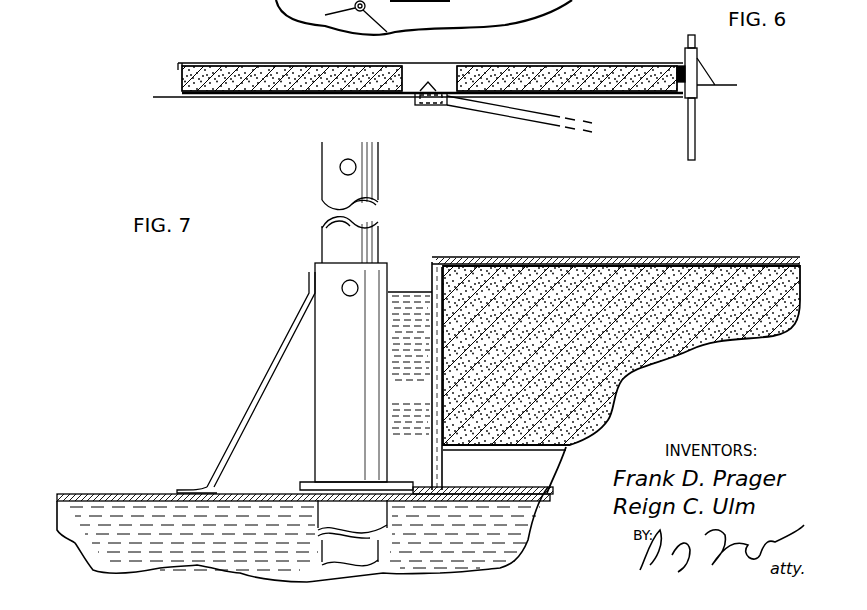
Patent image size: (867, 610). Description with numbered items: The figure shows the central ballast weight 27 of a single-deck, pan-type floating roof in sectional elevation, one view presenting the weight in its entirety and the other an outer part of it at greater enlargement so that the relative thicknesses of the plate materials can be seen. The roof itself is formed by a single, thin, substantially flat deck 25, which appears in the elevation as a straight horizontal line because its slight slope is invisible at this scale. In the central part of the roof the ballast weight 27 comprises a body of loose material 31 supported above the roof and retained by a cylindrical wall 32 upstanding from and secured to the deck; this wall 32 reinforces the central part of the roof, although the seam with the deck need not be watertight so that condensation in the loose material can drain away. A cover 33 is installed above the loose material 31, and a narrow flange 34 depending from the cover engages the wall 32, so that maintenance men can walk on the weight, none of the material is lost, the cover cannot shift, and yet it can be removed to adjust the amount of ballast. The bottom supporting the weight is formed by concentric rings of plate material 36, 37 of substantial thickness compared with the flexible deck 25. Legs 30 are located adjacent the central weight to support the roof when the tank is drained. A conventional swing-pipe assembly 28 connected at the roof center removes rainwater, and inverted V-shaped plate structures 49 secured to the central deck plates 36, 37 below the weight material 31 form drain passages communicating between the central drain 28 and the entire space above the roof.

In FIG. 7, the deck 25 is at (80, 493).
In FIG. 6, the ballast weight 27 is at (170, 53).
In FIG. 7, the ballast weight 27 is at (520, 241).
In FIG. 6, the swing-pipe assembly 28 is at (490, 110).
In FIG. 6, the legs 30 is at (357, 11).
In FIG. 7, the legs 30 is at (322, 243).
In FIG. 6, the body of loose material 31 is at (256, 67).
In FIG. 7, the body of loose material 31 is at (587, 265).
In FIG. 6, the cylindrical wall 32 is at (182, 80).
In FIG. 7, the cylindrical wall 32 is at (436, 380).
In FIG. 7, the cover 33 is at (652, 256).
In FIG. 7, the narrow flange 34 is at (430, 278).
In FIG. 7, the ring of plate material 36 is at (252, 489).
In FIG. 7, the ring of plate material 37 is at (497, 487).
In FIG. 6, the inverted V-shaped plate structures 49 is at (433, 85).
In FIG. 7, the inverted V-shaped plate structures 49 is at (545, 447).